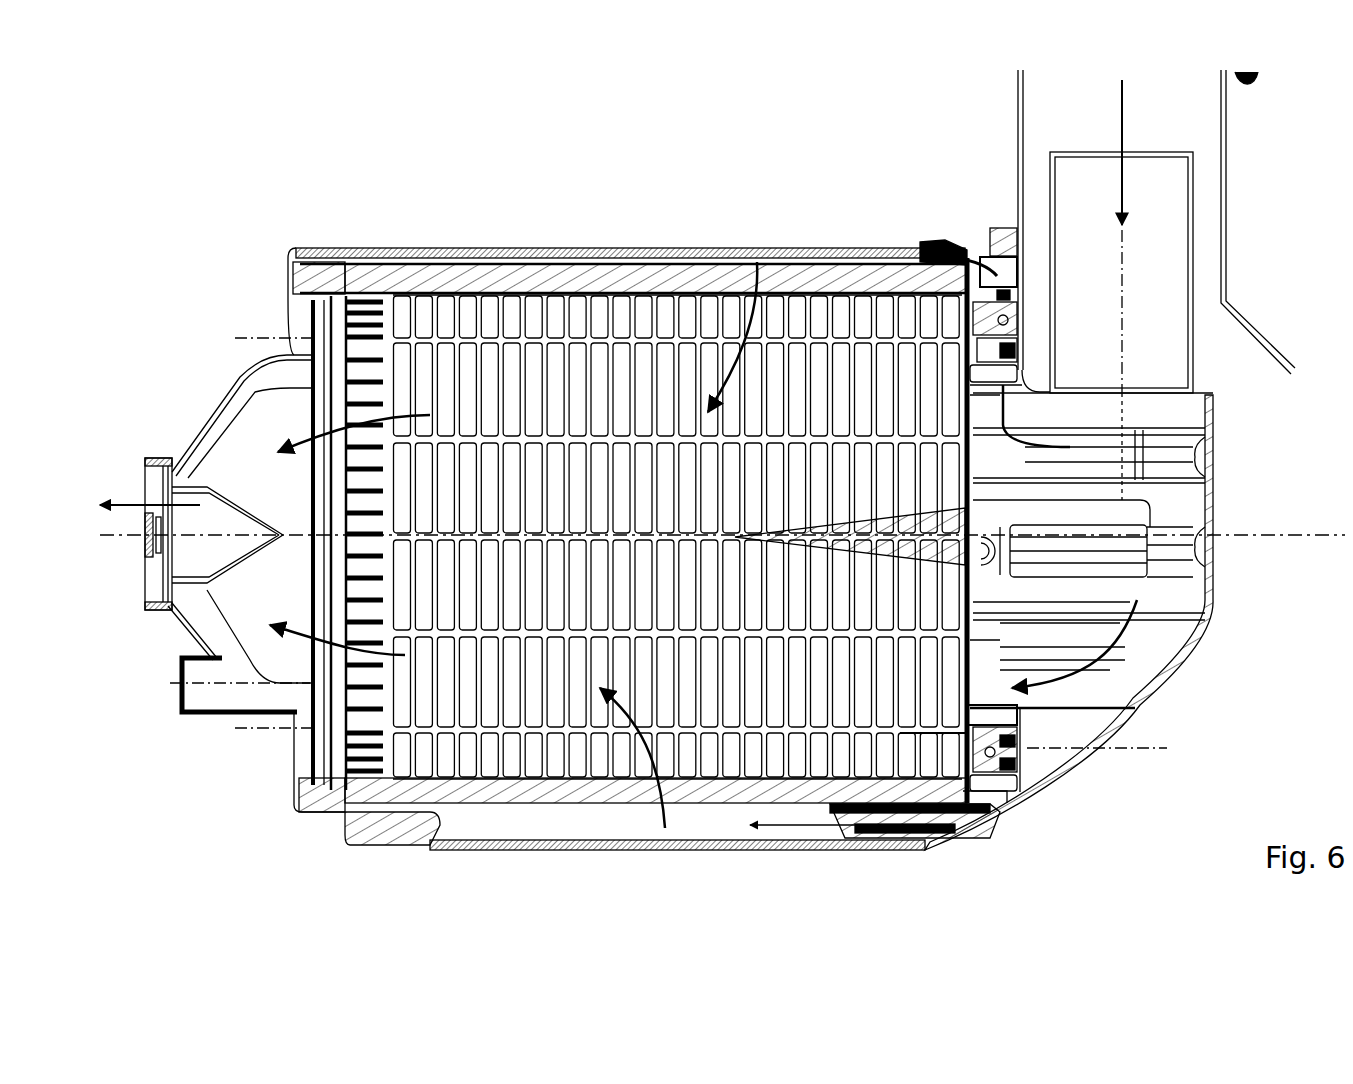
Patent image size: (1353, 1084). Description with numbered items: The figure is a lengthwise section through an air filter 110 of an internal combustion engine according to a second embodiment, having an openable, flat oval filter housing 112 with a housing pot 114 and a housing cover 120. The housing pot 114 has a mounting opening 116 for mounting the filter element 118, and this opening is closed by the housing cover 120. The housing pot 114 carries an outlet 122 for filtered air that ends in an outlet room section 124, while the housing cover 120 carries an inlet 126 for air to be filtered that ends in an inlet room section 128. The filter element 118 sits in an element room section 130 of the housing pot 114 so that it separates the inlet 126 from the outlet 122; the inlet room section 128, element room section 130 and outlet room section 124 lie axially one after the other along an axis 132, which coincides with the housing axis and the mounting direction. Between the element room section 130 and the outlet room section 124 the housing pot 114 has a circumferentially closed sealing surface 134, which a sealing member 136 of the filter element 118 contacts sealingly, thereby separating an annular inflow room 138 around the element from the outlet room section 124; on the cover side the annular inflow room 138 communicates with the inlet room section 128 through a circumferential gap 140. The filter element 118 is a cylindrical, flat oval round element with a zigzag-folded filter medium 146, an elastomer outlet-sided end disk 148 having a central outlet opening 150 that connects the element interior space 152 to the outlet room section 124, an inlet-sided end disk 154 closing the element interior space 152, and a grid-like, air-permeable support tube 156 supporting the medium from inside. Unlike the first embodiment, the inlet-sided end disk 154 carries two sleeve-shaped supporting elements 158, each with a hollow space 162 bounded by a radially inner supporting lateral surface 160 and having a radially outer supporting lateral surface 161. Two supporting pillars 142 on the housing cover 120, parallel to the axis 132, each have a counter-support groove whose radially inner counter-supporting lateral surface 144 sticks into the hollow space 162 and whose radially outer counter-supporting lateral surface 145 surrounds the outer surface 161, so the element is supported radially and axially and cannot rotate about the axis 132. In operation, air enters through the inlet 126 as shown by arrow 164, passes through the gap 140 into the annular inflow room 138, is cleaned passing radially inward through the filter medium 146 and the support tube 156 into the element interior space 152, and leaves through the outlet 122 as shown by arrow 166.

The air filter 110 is at (205, 160).
The filter housing 112 is at (548, 250).
The housing pot 114 is at (290, 262).
The mounting opening 116 is at (925, 255).
The filter element 118 is at (690, 260).
The housing cover 120 is at (1208, 640).
The outlet 122 is at (155, 500).
The outlet room section 124 is at (245, 440).
The inlet 126 is at (1215, 148).
The inlet room section 128 is at (1185, 590).
The element room section 130 is at (595, 825).
The axis 132 is at (1345, 535).
The sealing surface 134 is at (290, 798).
The sealing member 136 is at (300, 280).
The annular inflow room 138 is at (540, 820).
The circumferential gap 140 is at (962, 262).
The supporting pillars 142 is at (1022, 330).
The radially inner counter-supporting lateral surfaces 144 is at (1038, 350).
The radially outer counter-supporting lateral surfaces 145 is at (1010, 385).
The filter medium 146 is at (640, 265).
The outlet-sided end disk 148 is at (335, 258).
The outlet opening 150 is at (330, 575).
The element interior space 152 is at (605, 496).
The inlet-sided end disk 154 is at (975, 580).
The support tube 156 is at (435, 280).
The supporting elements 158 is at (1045, 300).
The radially inner supporting lateral surface 160 is at (900, 342).
The radially outer supporting lateral surfaces 161 is at (985, 258).
The hollow spaces 162 is at (997, 529).
The arrow 164 is at (1120, 130).
The arrow 166 is at (150, 530).